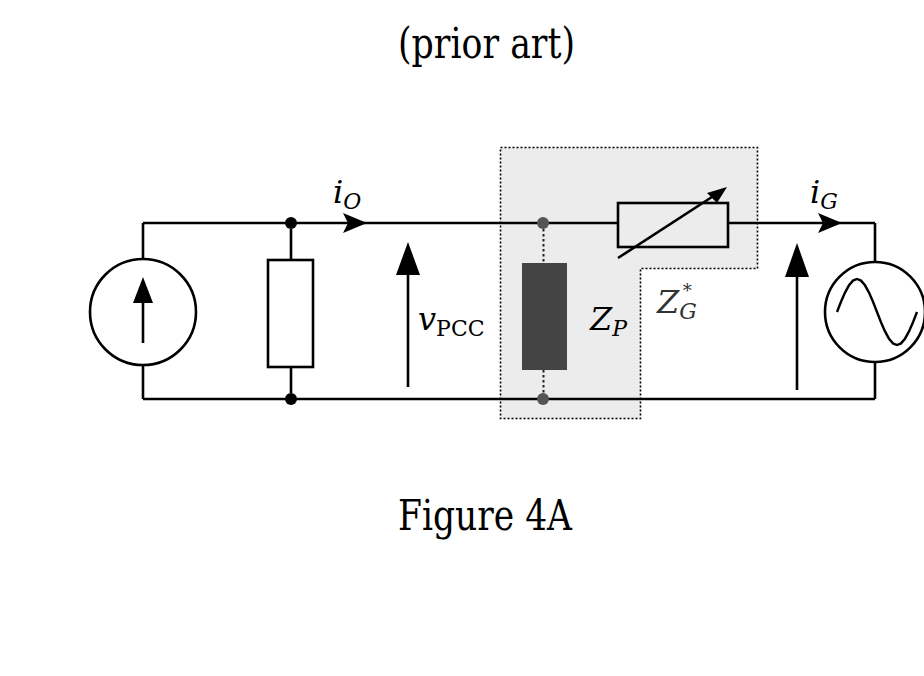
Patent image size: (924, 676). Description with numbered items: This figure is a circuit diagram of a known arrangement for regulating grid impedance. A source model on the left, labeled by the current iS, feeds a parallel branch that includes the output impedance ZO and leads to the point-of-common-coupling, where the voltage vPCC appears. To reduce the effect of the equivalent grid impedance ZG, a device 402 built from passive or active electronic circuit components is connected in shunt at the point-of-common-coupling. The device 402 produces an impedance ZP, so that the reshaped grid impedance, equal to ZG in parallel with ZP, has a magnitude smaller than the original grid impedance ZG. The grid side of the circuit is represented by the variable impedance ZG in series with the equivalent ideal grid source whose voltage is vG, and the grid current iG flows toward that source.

The device 402 is at (525, 268).
The current source i_S iS is at (120, 312).
The output impedance Z_O ZO is at (321, 313).
The equivalent grid impedance ZG is at (673, 208).
The voltage of equivalent ideal grid source vG is at (830, 312).